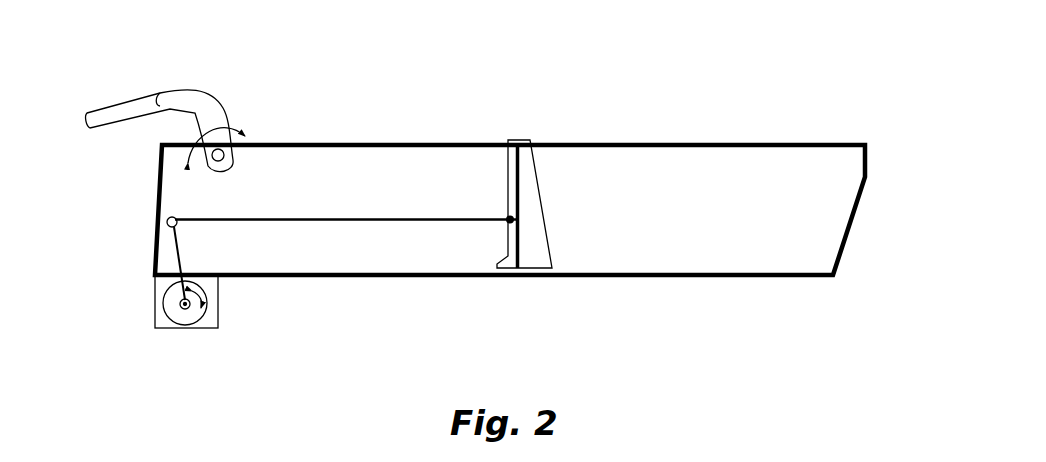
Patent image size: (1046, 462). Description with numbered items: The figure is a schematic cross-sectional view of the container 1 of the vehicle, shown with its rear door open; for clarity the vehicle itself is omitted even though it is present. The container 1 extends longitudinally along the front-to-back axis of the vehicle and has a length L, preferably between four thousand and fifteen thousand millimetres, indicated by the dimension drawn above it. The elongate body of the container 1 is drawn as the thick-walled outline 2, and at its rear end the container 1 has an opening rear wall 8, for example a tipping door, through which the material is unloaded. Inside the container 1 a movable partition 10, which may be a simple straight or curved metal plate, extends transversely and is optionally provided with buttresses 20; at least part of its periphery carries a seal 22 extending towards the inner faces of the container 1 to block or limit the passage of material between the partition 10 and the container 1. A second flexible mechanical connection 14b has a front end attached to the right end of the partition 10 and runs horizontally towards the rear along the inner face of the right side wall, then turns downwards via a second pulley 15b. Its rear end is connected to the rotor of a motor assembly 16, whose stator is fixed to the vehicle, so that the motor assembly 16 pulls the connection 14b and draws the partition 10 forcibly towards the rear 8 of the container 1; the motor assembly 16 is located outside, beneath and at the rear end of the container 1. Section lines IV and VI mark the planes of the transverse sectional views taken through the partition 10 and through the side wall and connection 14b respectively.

The container 1 is at (621, 320).
The frame 2 is at (708, 276).
The opening rear wall 8 is at (128, 103).
The movable partition 10 is at (508, 205).
The second flexible mechanical connection 14b is at (337, 216).
The second pulley 15b is at (178, 226).
The motor assembly 16 is at (160, 305).
The buttresses 20 is at (530, 185).
The seal 22 is at (520, 248).
The length L is at (865, 203).
The section line IV is at (376, 315).
The section line VI is at (75, 218).